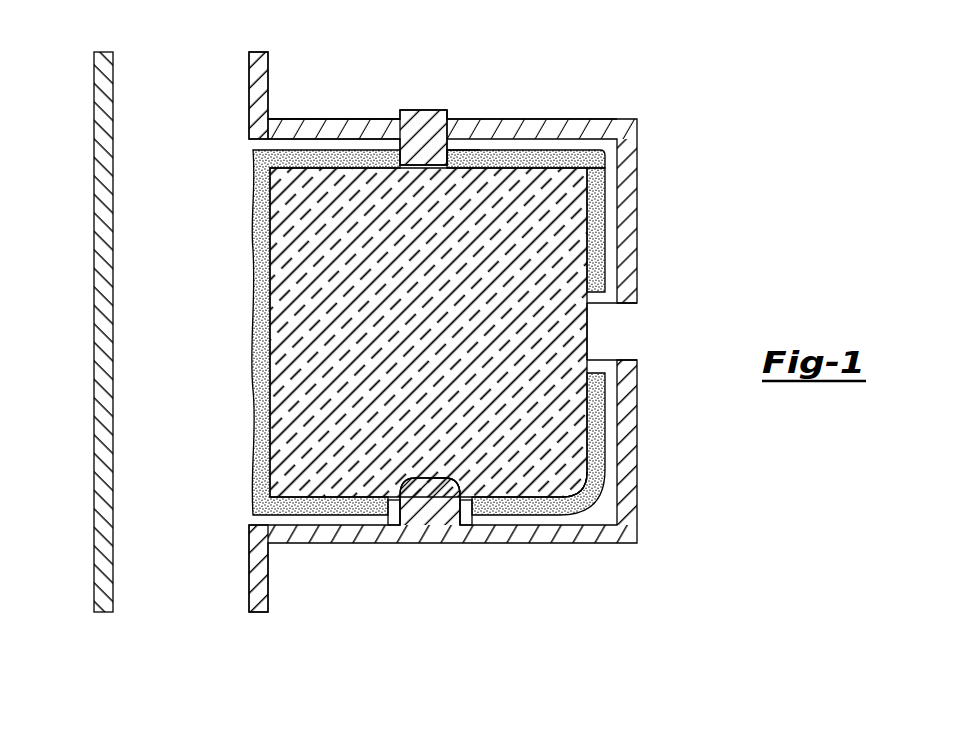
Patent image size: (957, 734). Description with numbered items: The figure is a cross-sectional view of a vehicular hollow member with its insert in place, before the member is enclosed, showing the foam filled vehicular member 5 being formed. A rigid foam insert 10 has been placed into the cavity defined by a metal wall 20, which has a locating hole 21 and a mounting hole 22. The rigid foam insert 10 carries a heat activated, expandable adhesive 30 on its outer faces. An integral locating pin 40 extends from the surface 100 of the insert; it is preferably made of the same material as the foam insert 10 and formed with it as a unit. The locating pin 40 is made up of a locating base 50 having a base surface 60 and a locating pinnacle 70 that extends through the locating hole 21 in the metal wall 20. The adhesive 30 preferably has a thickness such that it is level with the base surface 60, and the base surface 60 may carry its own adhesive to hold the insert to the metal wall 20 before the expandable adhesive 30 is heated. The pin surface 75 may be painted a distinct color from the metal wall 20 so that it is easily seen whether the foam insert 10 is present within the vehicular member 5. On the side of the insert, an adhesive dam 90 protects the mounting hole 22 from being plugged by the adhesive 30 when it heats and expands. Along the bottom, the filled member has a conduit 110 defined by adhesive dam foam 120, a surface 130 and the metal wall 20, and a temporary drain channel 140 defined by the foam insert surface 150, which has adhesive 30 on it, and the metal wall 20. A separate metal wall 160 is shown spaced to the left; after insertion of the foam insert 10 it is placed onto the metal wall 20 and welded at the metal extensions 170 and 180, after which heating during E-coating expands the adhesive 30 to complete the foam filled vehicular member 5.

The foam filled vehicular member 5 is at (338, 95).
The rigid foam insert 10 is at (540, 212).
The metal wall 20 is at (520, 119).
The locating hole 21 is at (454, 107).
The mounting hole 22 is at (620, 337).
The heat activated adhesive 30 is at (602, 248).
The locating pin 40 is at (403, 85).
The locating base 50 is at (455, 152).
The base surface 60 is at (400, 150).
The locating pinnacle 70 is at (432, 128).
The pin surface 75 is at (441, 110).
The adhesive dam 90 is at (600, 305).
The surface 100 is at (555, 162).
The conduit 110 is at (415, 510).
The adhesive dam foam 120 is at (370, 527).
The surface 130 is at (440, 482).
The temporary drain channel 140 is at (585, 497).
The foam insert surface 150 is at (592, 480).
The metal wall 160 is at (94, 88).
The metal extension 170 is at (244, 77).
The metal extension 180 is at (243, 587).